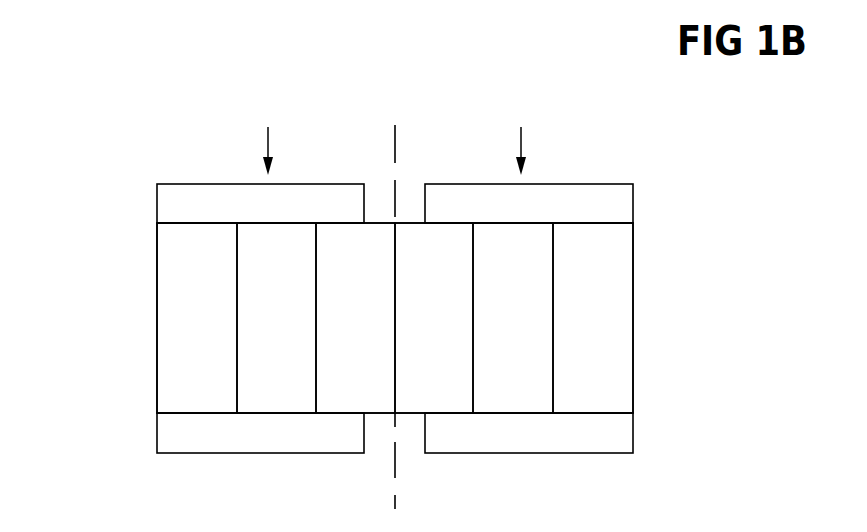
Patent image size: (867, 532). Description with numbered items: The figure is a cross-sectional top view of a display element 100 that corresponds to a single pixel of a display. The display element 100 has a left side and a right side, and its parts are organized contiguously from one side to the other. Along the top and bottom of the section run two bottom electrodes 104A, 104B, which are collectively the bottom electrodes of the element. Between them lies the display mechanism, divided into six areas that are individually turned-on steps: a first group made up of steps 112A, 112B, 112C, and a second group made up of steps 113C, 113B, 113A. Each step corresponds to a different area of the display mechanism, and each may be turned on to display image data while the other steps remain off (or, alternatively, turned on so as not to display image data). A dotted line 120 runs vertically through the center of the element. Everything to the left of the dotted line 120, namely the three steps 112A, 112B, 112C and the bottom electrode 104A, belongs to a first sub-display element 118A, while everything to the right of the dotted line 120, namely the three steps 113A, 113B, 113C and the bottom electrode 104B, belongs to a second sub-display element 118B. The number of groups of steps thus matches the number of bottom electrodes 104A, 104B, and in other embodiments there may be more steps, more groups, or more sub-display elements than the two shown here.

The display element 100 is at (121, 214).
The bottom electrode 104A is at (216, 214).
The bottom electrode 104B is at (484, 214).
The individually turned-on step 112A is at (223, 328).
The individually turned-on step 112B is at (301, 328).
The individually turned-on step 112C is at (383, 328).
The individually turned-on step 113A is at (619, 328).
The individually turned-on step 113B is at (539, 328).
The individually turned-on step 113C is at (461, 328).
The first sub-display element 118A is at (269, 138).
The second sub-display element 118B is at (520, 138).
The dotted line 120 is at (395, 139).